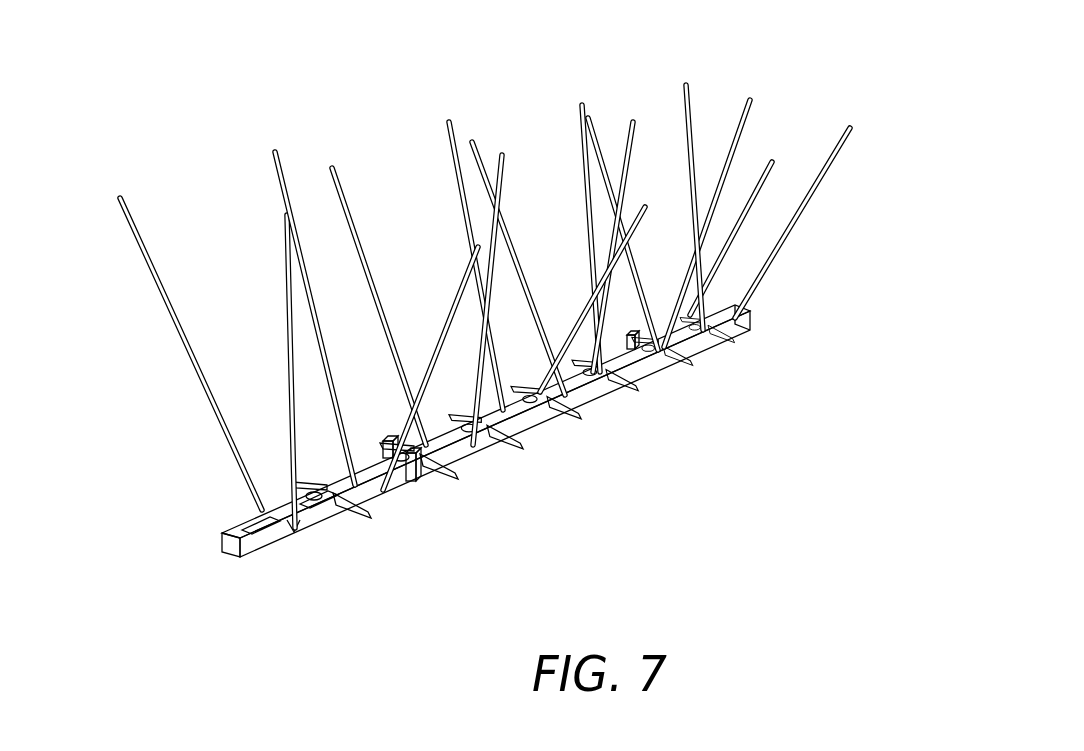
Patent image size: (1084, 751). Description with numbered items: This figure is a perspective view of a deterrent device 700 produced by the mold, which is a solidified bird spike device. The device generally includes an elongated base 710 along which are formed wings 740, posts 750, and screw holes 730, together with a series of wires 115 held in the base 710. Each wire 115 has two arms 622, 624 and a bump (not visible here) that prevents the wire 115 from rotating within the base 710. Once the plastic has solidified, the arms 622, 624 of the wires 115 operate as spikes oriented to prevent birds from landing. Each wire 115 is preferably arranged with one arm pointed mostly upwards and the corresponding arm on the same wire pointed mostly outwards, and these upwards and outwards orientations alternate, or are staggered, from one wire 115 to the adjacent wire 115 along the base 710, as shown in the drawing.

The deterrent device 700 is at (140, 116).
The wire 115 is at (452, 160).
The arm 622 is at (283, 243).
The arm 624 is at (150, 267).
The base 710 is at (222, 535).
The screw hole 730 is at (262, 506).
The wing 740 is at (308, 487).
The post 750 is at (384, 436).